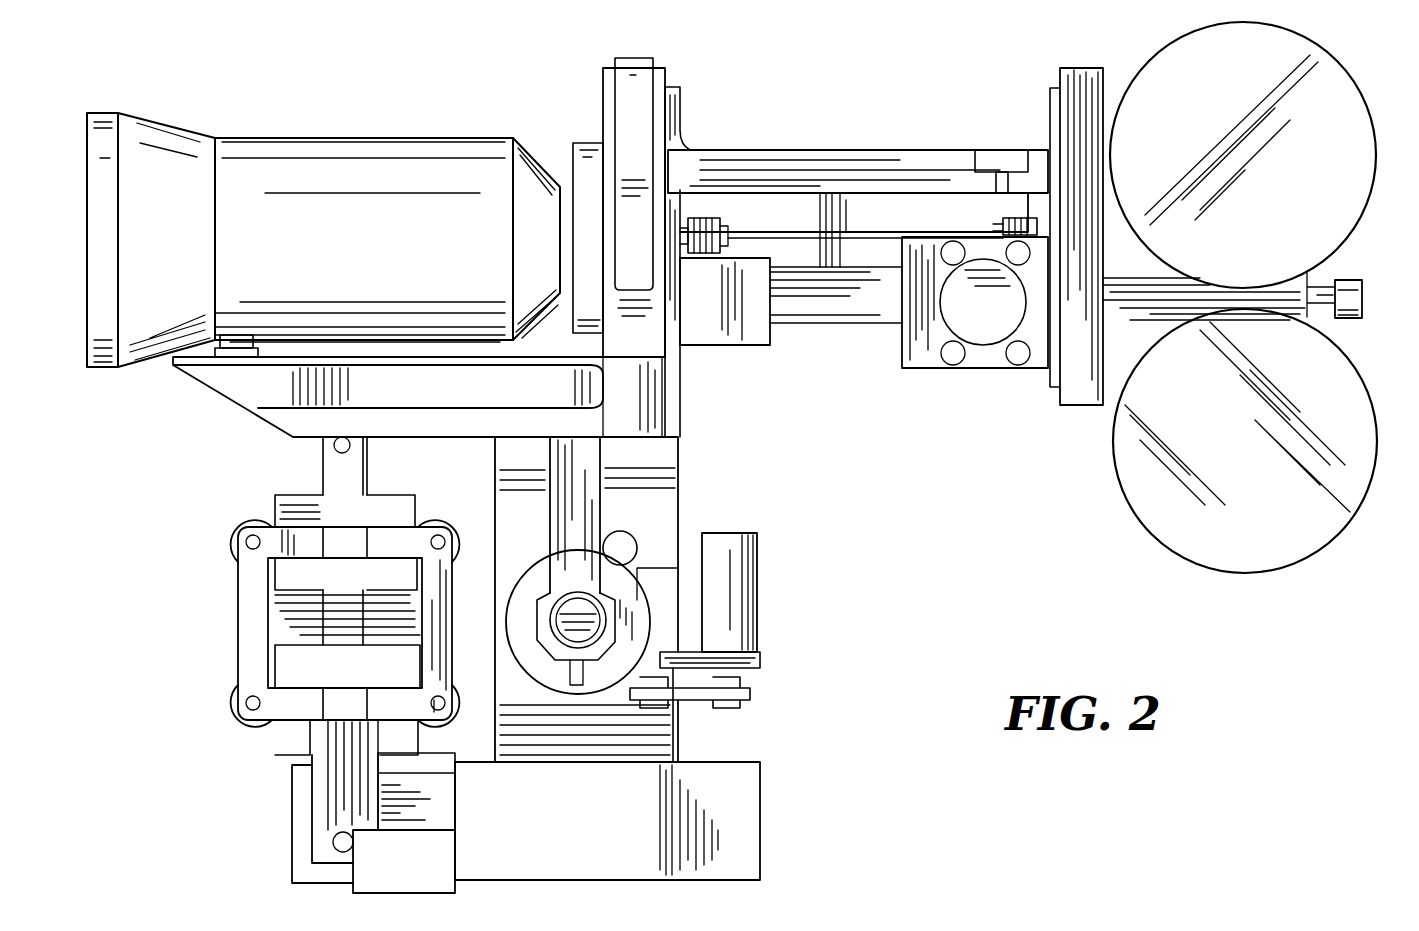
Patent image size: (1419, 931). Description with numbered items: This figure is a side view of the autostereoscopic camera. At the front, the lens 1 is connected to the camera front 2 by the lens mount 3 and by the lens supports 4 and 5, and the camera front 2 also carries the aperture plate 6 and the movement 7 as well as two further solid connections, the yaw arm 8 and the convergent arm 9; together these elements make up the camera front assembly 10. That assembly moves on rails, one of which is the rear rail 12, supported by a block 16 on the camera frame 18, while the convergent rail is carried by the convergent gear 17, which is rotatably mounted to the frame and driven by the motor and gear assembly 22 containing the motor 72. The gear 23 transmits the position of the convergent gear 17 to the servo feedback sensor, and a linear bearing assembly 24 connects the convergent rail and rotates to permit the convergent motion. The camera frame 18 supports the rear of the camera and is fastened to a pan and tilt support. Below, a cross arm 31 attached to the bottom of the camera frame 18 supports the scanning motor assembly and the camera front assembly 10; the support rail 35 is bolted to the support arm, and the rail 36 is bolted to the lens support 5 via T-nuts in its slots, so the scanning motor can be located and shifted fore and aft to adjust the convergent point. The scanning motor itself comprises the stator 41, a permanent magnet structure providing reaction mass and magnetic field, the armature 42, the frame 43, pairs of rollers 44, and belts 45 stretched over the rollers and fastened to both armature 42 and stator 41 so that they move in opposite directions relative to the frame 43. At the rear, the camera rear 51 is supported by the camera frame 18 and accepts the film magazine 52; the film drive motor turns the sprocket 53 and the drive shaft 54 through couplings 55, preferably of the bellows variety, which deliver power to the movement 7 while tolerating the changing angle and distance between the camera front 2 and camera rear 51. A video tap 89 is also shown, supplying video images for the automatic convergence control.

The lens 1 is at (120, 113).
The camera front 2 is at (604, 92).
The lens mount 3 is at (590, 152).
The lens support 4 is at (240, 352).
The lens support 5 is at (245, 398).
The aperture plate 6 is at (682, 112).
The movement 7 is at (755, 347).
The yaw arm 8 is at (918, 198).
The convergent arm 9 is at (585, 470).
The camera front assembly 10 is at (924, 132).
The rear rail 12 is at (996, 182).
The block 16 is at (1000, 150).
The convergent gear 17 is at (596, 680).
The camera frame 18 is at (553, 162).
The motor and gear assembly 22 is at (760, 665).
The gear 23 is at (626, 545).
The linear bearing assembly 24 is at (568, 636).
The cross arm 31 is at (576, 821).
The support rail 35 is at (353, 840).
The rail 36 is at (338, 450).
The stator 41 is at (276, 497).
The armature 42 is at (365, 472).
The frame 43 is at (325, 785).
The rollers 44 is at (228, 540).
The belts 45 is at (230, 580).
The camera rear 51 is at (1062, 80).
The film magazine 52 is at (1330, 222).
The sprocket 53 is at (1000, 316).
The drive shaft 54 is at (870, 236).
The couplings 55 is at (716, 232).
The motor 72 is at (745, 595).
The video tap 89 is at (642, 78).